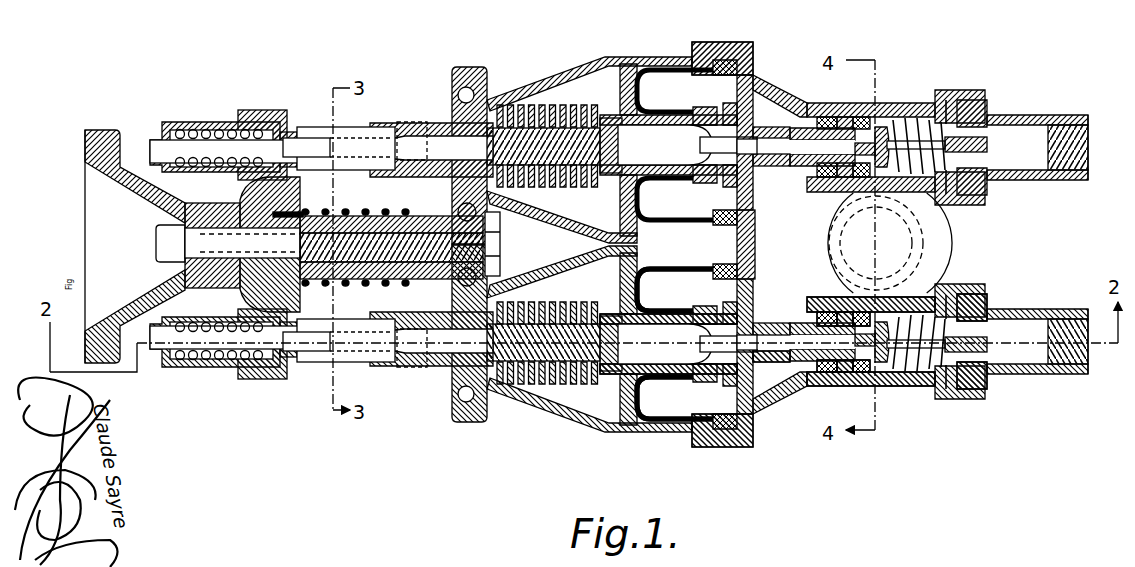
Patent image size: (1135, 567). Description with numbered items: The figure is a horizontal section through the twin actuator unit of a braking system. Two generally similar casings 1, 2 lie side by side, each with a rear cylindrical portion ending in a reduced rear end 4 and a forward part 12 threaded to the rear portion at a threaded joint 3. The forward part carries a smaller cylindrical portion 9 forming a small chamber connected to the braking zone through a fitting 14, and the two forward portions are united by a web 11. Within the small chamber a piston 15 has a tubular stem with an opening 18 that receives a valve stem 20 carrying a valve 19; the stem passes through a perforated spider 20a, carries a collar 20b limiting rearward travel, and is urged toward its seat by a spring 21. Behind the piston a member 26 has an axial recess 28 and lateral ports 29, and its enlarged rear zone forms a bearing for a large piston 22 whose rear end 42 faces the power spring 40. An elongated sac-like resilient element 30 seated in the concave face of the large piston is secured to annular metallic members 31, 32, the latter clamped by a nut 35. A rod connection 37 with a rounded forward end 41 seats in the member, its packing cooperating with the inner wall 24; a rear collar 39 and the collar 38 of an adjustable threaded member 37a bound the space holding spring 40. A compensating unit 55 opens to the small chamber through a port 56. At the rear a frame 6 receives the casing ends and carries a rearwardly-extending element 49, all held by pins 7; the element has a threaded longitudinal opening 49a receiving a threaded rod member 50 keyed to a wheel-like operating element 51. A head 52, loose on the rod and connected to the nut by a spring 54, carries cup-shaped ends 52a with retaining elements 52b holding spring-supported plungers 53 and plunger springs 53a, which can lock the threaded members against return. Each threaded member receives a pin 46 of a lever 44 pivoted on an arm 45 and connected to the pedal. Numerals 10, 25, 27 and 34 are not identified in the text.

The casing 1 is at (660, 57).
The casing 2 is at (640, 432).
The threaded joint 3 is at (700, 42).
The reduced rear end 4 is at (535, 82).
The frame 6 is at (468, 67).
The pins 7 is at (458, 210).
The cylindrical portion 9 is at (886, 103).
The end body 10 is at (906, 393).
The web 11 is at (756, 244).
The forward part of casing 12 is at (712, 42).
The fitting 14 is at (1046, 118).
The piston 15 is at (840, 103).
The opening 18 is at (800, 166).
The valve 19 is at (884, 133).
The valve stem 20 is at (968, 135).
The spider 20a is at (952, 95).
The collar 20b is at (985, 165).
The spring 21 is at (908, 172).
The large piston 22 is at (622, 80).
The inner wall 24 is at (665, 116).
The cup lower portion 25 is at (672, 379).
The member 26 is at (770, 127).
The rod wall 27 is at (783, 327).
The axial recess 28 is at (773, 166).
The lateral ports 29 is at (750, 166).
The sac-like resilient element 30 is at (640, 88).
The annular metallic member 31 is at (735, 60).
The annular metallic member 32 is at (706, 107).
The piston rod portion 34 is at (675, 318).
The nut 35 is at (745, 110).
The rod connection 37 is at (543, 244).
The threaded member 37a is at (315, 130).
The collar 38 is at (490, 88).
The rear collar 39 is at (580, 187).
The spring 40 is at (541, 106).
The forward end 41 is at (648, 153).
The rear end of piston 42 is at (614, 175).
The lever 44 is at (341, 138).
The arm 45 is at (375, 178).
The pin 46 is at (414, 122).
The rearwardly-extending element 49 is at (405, 215).
The longitudinal opening 49a is at (386, 280).
The threaded rod member 50 is at (341, 285).
The operating element 51 is at (95, 130).
The head 52 is at (241, 200).
The cup-shaped ends 52a is at (213, 122).
The retaining elements 52b is at (293, 132).
The plungers 53 is at (284, 110).
The plunger springs 53a is at (246, 130).
The spring 54 is at (317, 212).
The automatic compensating unit 55 is at (952, 243).
The port 56 is at (878, 207).